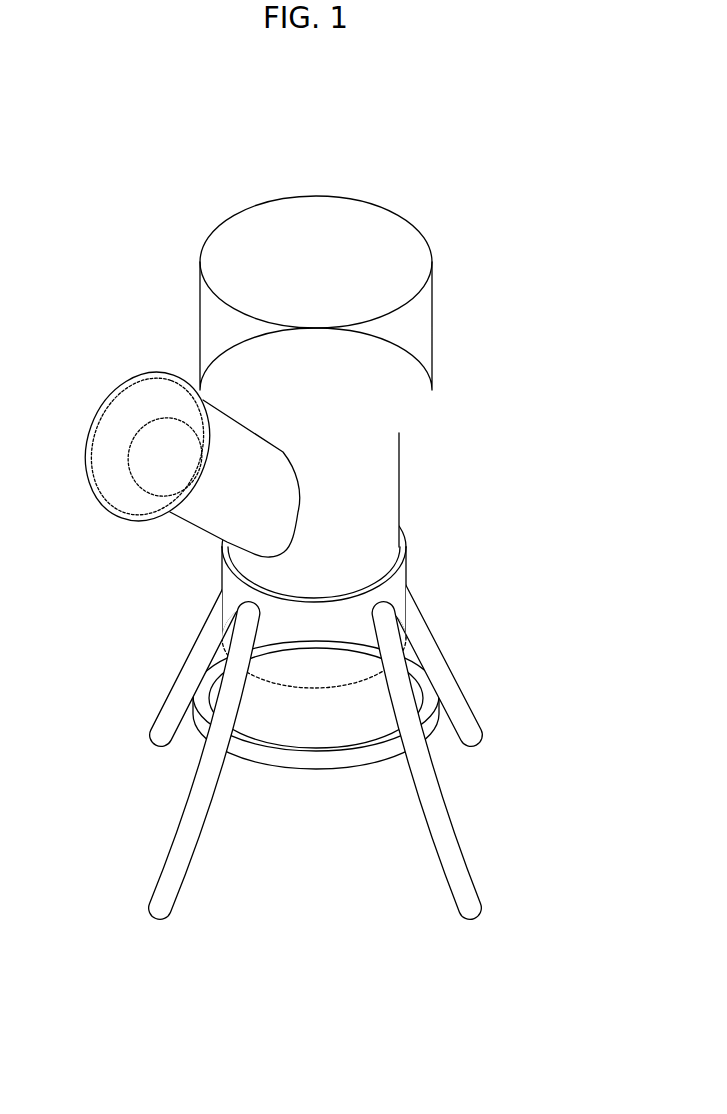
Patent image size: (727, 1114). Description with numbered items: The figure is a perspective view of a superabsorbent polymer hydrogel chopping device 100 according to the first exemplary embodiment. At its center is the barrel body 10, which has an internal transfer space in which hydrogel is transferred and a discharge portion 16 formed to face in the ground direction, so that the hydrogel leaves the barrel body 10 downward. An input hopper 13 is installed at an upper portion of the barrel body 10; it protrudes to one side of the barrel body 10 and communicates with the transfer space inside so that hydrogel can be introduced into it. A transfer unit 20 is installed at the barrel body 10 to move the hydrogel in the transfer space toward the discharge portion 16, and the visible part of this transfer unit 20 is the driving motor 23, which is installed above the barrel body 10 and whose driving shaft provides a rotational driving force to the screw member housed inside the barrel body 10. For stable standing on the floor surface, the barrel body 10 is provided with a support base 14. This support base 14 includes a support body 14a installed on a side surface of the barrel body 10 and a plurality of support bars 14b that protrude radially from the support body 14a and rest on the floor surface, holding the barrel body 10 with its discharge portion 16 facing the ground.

The superabsorbent polymer hydrogel chopping device 100 is at (458, 170).
The barrel body 10 is at (385, 488).
The input hopper 13 is at (192, 513).
The support base 14 is at (277, 840).
The support body 14a is at (292, 670).
The support bars 14b is at (172, 710).
The discharge portion 16 is at (340, 765).
The transfer unit 20 is at (457, 380).
The driving motor 23 is at (420, 325).